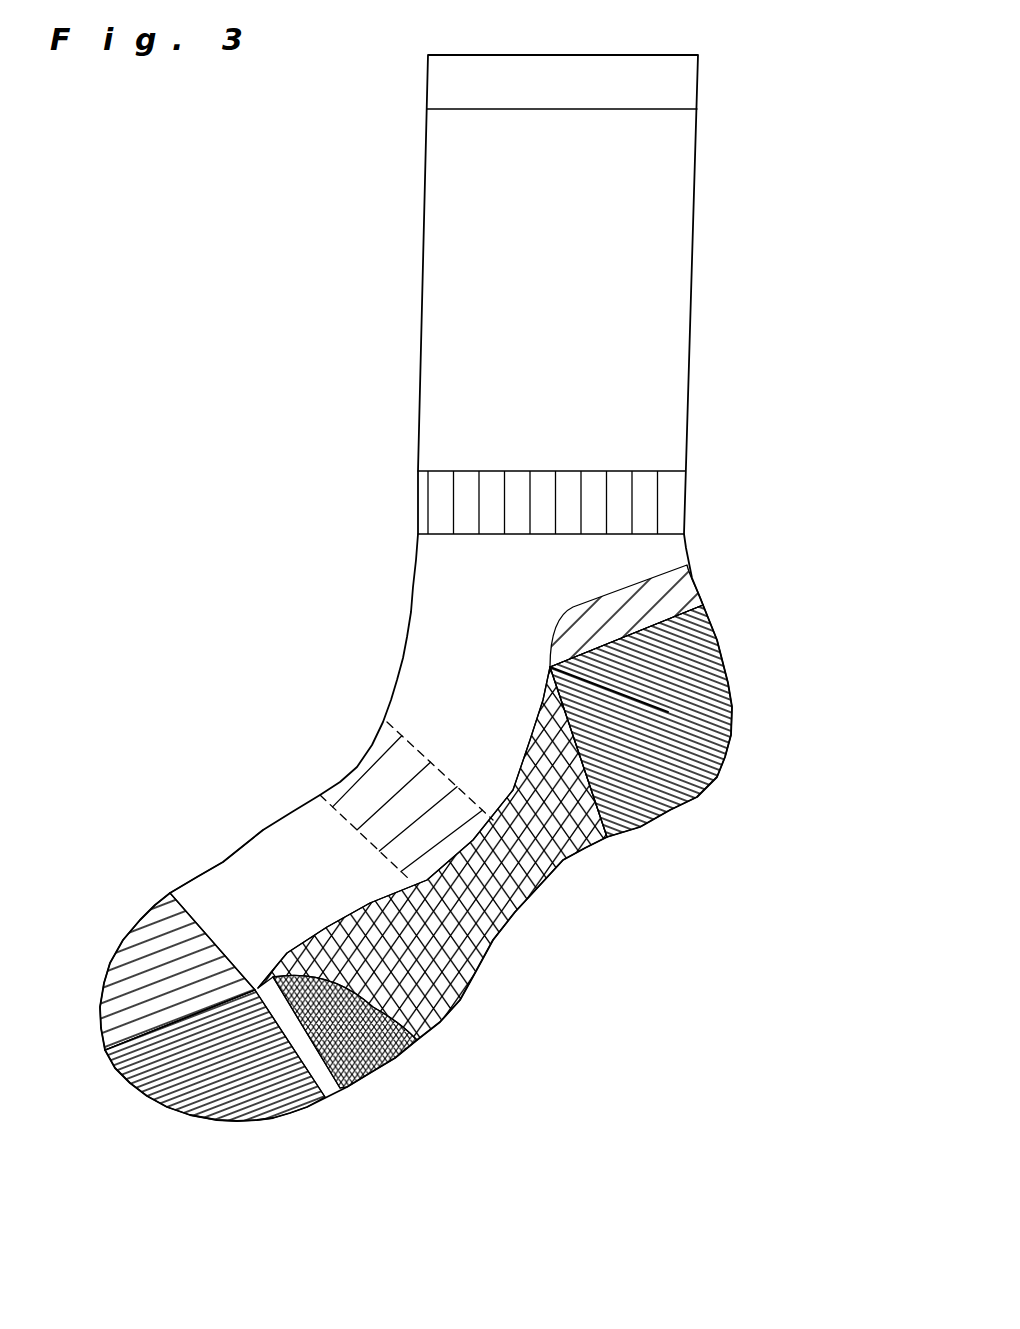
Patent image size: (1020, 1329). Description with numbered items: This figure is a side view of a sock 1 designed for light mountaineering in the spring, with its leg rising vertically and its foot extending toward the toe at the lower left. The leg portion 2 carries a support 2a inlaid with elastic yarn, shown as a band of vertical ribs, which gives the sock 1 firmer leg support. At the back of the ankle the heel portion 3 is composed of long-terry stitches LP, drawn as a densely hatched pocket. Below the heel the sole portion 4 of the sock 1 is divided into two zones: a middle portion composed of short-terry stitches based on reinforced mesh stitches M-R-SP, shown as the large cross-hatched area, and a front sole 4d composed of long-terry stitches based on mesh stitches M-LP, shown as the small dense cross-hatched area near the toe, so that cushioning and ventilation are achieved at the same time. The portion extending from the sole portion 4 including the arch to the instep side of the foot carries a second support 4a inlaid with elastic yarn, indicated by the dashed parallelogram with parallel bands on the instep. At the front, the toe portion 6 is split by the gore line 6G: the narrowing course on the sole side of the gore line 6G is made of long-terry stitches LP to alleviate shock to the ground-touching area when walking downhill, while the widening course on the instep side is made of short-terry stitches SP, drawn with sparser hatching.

The sock 1 is at (500, 588).
The leg portion 2 is at (664, 206).
The support 2a is at (437, 428).
The heel portion 3 is at (710, 648).
The sole portion 4 is at (542, 827).
The support 4a is at (339, 648).
The front sole 4d is at (429, 1041).
The toe portion 6 is at (184, 835).
The gore line 6G is at (147, 926).
The short-terry stitches SP is at (502, 745).
The long-terry stitches LP is at (478, 909).
The short-terry stitches based on reinforced mesh stitches M-R-SP is at (560, 883).
The long-terry stitches based on mesh stitches M-LP is at (466, 1055).